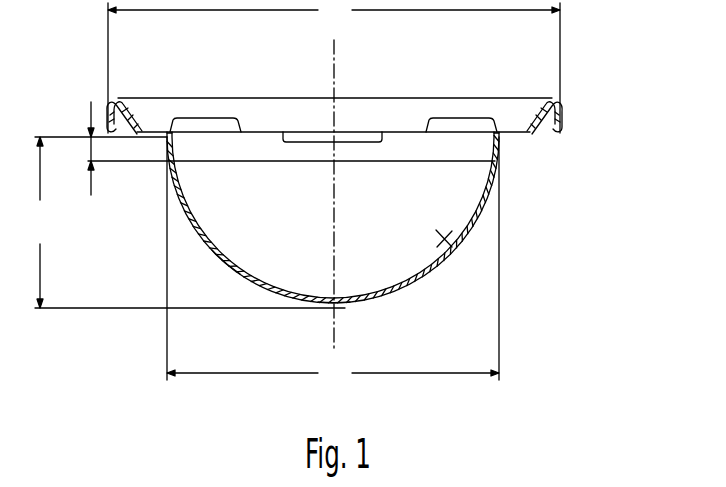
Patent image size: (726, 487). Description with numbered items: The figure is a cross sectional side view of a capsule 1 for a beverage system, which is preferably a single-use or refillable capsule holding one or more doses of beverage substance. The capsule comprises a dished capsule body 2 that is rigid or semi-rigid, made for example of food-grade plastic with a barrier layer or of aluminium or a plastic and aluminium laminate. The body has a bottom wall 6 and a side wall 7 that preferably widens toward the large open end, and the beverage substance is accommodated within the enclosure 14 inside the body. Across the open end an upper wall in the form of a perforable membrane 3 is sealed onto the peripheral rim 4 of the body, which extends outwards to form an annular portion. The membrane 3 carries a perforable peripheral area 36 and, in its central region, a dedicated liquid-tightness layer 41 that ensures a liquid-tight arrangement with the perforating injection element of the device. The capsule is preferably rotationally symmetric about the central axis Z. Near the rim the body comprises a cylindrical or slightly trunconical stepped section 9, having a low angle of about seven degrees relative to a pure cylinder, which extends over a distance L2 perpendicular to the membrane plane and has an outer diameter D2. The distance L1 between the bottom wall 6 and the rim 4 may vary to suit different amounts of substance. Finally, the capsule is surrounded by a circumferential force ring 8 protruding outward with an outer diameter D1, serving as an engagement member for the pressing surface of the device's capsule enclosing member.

The capsule 1 is at (512, 198).
The capsule body 2 is at (419, 288).
The perforable membrane 3 is at (399, 110).
The peripheral rim 4 is at (516, 138).
The bottom wall 6 is at (337, 308).
The side wall 7 is at (254, 280).
The circumferential force ring 8 is at (560, 105).
The cylindrical or slightly trunconical section 9 is at (168, 146).
The enclosure 14 is at (439, 234).
The perforable peripheral area 36 is at (208, 112).
The liquid-tightness layer 41 is at (298, 142).
The outer diameter of the force ring D1 is at (334, 66).
The outer diameter of the stepped section D2 is at (333, 262).
The distance between the bottom portion and the rim L1 is at (189, 222).
The distance of the section L2 is at (279, 138).
The central axis Z is at (336, 60).